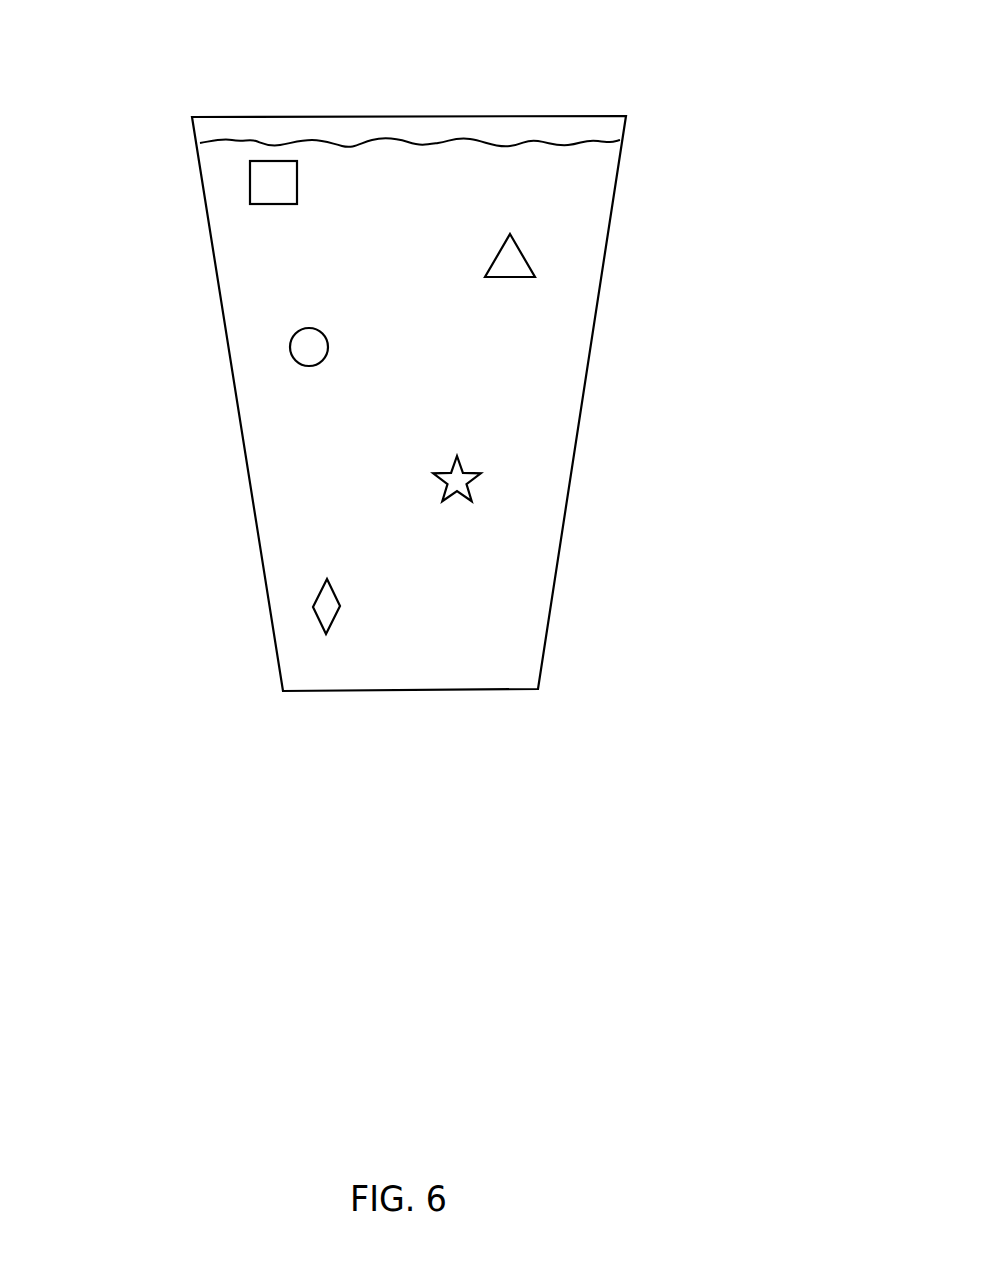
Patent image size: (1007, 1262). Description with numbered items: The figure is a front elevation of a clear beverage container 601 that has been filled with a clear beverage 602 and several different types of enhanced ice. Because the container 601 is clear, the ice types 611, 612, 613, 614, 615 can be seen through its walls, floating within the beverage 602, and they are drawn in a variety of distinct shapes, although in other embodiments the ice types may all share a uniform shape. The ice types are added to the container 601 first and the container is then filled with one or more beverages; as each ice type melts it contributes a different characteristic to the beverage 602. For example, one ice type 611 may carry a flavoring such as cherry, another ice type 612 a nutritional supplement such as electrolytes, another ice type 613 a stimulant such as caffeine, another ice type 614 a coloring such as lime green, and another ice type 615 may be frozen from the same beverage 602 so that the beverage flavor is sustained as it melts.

The container 601 is at (625, 130).
The clear beverage 602 is at (438, 142).
The ice type 611 is at (250, 195).
The ice type 612 is at (528, 262).
The ice type 613 is at (290, 350).
The ice type 614 is at (482, 484).
The ice type 615 is at (312, 600).